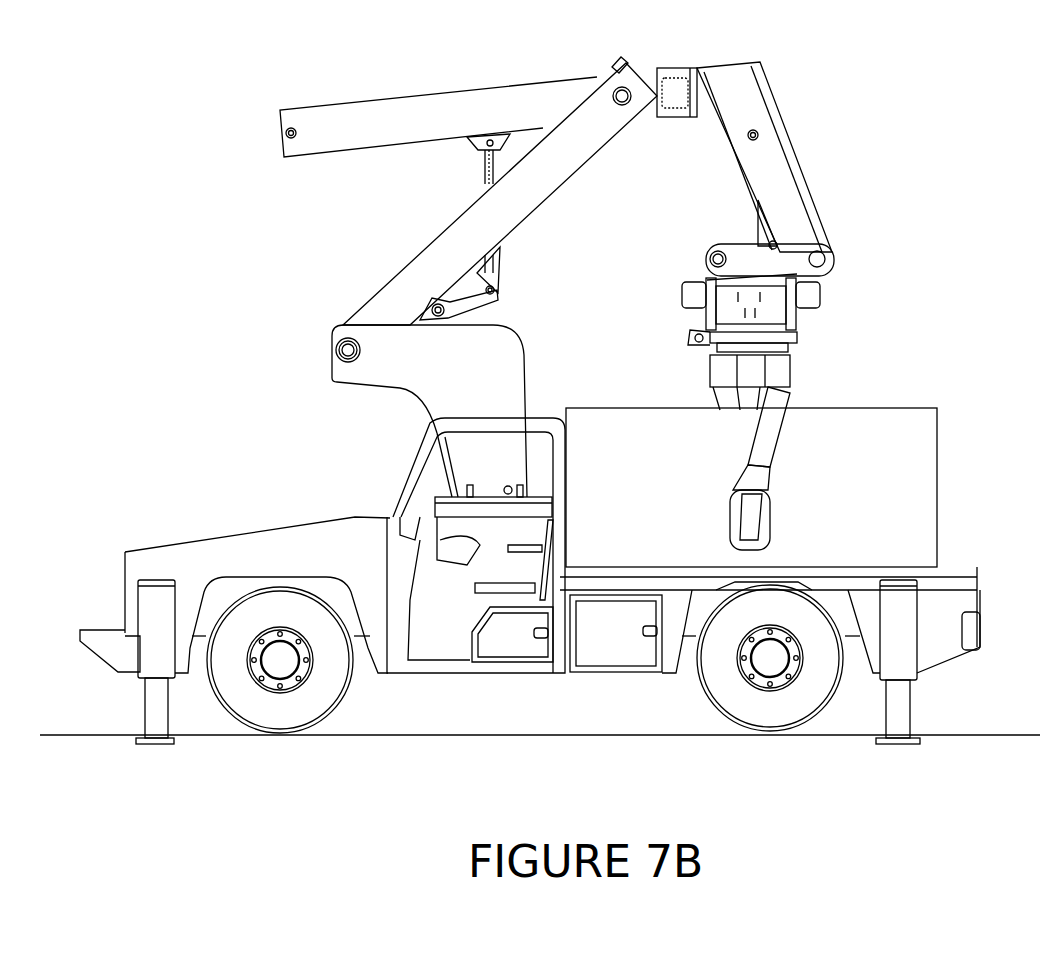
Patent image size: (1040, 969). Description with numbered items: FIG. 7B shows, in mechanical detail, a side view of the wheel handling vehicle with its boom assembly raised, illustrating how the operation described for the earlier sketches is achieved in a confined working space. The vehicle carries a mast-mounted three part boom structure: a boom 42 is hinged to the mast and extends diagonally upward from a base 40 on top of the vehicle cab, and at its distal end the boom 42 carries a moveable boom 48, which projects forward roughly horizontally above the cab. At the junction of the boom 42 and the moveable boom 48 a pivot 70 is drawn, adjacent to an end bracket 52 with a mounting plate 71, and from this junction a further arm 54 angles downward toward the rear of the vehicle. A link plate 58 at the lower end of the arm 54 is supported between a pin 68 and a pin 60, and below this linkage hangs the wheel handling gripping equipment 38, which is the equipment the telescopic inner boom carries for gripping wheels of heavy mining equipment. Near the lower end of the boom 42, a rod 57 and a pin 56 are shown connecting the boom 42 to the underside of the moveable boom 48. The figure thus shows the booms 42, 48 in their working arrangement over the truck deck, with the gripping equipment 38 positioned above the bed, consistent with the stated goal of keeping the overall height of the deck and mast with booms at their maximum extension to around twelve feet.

The wheel handling gripping equipment 38 is at (778, 400).
The turret / boom base 40 is at (398, 373).
The boom 42 is at (390, 293).
The moveable boom 48 is at (457, 92).
The boom end bracket 52 is at (637, 102).
The jib arm 54 is at (785, 152).
The pivot pin 56 is at (448, 318).
The link rod 57 is at (493, 267).
The link plate 58 is at (766, 218).
The pivot pin 60 is at (826, 258).
The pivot pin 68 is at (710, 255).
The pivot pin 70 is at (620, 62).
The mounting plate 71 is at (658, 110).